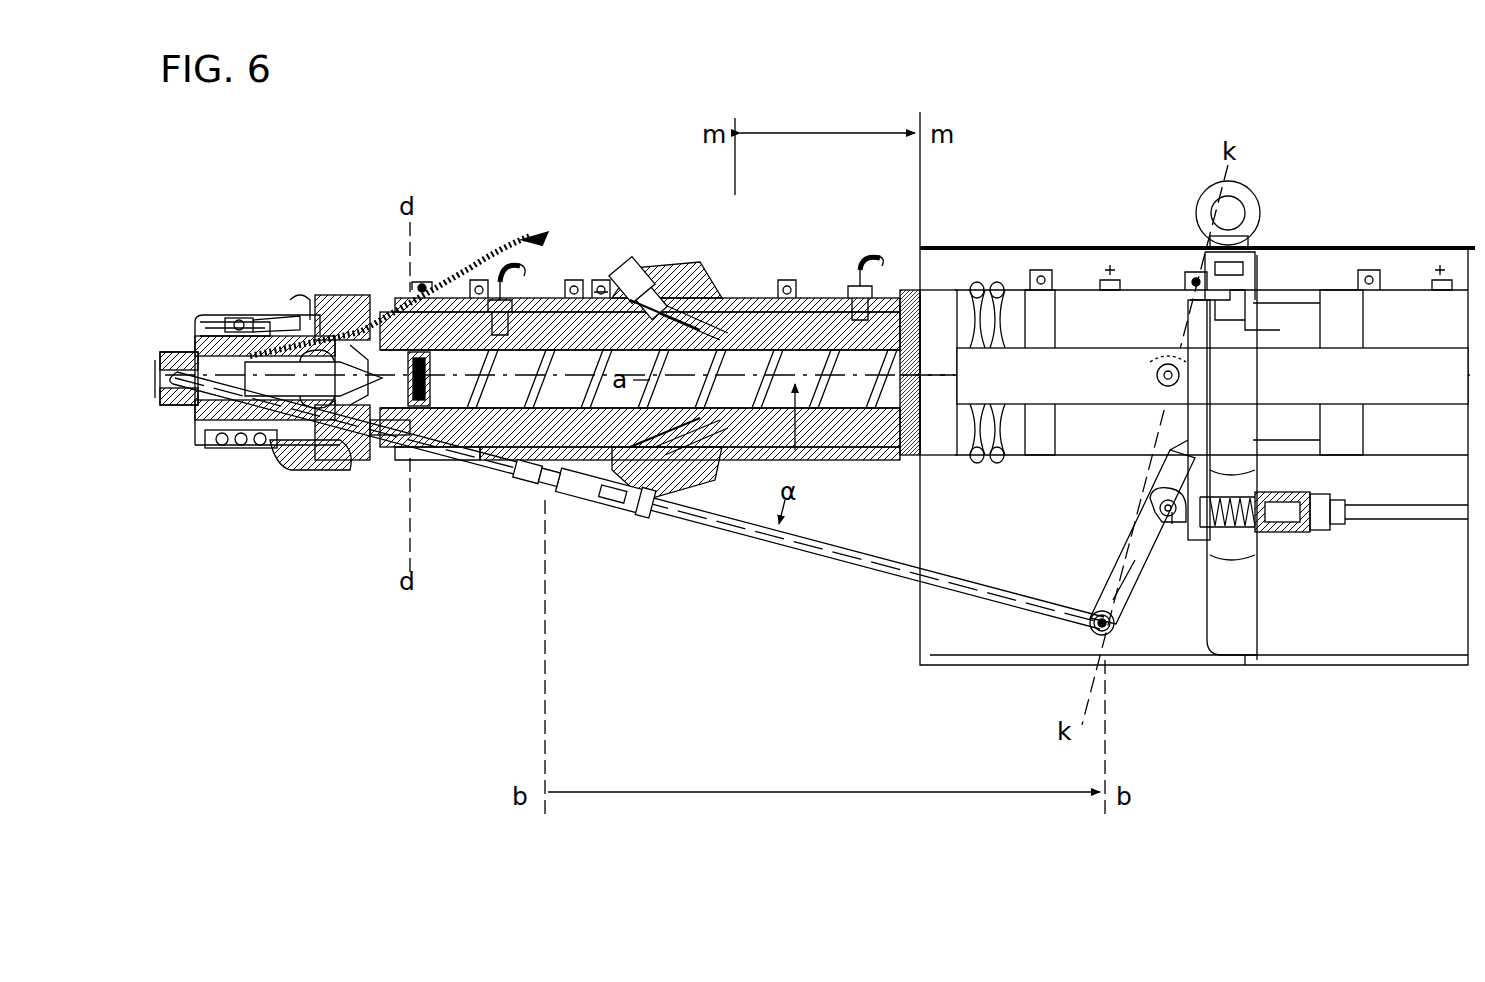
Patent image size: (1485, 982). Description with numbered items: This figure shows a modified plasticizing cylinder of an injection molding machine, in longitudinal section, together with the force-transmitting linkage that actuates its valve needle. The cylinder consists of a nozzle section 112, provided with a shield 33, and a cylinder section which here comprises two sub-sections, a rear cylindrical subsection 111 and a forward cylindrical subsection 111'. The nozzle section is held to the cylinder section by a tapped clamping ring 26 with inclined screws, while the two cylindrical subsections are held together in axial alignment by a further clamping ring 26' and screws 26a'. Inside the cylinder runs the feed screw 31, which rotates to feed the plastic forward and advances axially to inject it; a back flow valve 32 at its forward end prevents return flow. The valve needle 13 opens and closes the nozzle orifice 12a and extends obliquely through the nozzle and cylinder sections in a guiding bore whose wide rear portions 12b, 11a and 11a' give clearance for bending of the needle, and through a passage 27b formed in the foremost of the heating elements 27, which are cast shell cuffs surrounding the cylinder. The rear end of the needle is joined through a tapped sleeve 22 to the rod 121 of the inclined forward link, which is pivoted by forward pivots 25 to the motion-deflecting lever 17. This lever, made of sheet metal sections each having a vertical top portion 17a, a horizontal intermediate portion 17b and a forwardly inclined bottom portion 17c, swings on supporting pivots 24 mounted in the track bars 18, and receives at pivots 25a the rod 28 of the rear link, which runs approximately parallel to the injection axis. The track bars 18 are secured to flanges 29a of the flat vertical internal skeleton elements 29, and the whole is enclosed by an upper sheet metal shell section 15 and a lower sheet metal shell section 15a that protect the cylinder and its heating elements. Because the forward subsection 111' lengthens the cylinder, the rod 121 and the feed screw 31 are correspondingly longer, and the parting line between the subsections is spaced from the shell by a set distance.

The upper sheet metal shell section 15 is at (1100, 248).
The lower sheet metal shell section 15a is at (1380, 625).
The heating elements 27 is at (535, 300).
The feed screw 31 is at (525, 393).
The clamping ring 26' is at (689, 352).
The screws 26a' is at (651, 254).
The forward cylindrical subsection 111' is at (609, 250).
The rear cylindrical subsection 111 is at (1071, 264).
The track bars 18 is at (1400, 390).
The supporting pivots 24 is at (1155, 385).
The motion-deflecting lever 17 is at (1200, 470).
The vertical top portion 17a is at (1165, 445).
The horizontal intermediate portion 17b is at (1185, 478).
The forwardly inclined vertical bottom portion 17c is at (1128, 578).
The pivots 25a is at (1150, 510).
The forward pivots 25 is at (1086, 640).
The rod 28 is at (1410, 510).
The internal skeleton elements 29 is at (1262, 597).
The flanges 29a is at (1225, 622).
The rod 121 is at (870, 568).
The tapped sleeve 22 is at (583, 492).
The nozzle orifice 12a is at (168, 400).
The nozzle section 112 is at (205, 316).
The valve needle 13 is at (272, 448).
The relatively wide rear portion of the needle-guiding bore 12b is at (322, 465).
The shield 33 is at (252, 315).
The clamping ring 26 is at (399, 282).
The back flow valve 32 is at (378, 305).
The relatively wide rear portion of the needle-guiding bore 11a' is at (382, 473).
The passage 27b is at (445, 465).
The relatively wide rear portion of the needle-guiding bore 11a is at (695, 404).